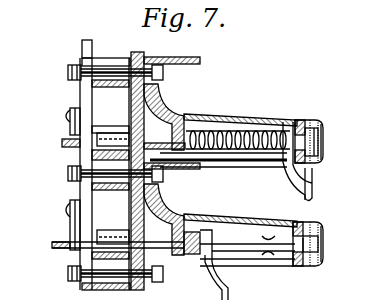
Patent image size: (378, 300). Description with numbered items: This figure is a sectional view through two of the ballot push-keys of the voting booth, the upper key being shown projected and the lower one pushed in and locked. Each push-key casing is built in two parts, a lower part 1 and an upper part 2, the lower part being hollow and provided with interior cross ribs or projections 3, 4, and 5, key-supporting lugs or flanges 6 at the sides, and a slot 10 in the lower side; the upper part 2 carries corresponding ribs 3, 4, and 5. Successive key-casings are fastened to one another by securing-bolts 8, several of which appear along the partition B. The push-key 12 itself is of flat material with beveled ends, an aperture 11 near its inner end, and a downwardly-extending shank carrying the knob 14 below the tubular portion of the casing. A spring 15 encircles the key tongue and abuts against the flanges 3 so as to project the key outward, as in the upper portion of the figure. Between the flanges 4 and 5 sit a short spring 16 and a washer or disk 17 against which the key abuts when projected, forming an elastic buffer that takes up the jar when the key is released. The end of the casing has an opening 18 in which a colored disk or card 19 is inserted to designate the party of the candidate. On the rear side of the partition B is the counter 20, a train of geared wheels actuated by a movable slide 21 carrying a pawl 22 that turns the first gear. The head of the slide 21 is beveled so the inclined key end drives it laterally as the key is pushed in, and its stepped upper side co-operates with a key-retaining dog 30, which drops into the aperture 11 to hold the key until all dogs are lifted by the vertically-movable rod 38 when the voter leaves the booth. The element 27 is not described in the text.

The lower casing part 1 is at (249, 165).
The upper casing part 2 is at (262, 119).
The cross rib 3 is at (181, 116).
The cross rib 4 is at (301, 252).
The cross rib 5 is at (303, 264).
The key-supporting lug 6 is at (268, 242).
The securing-bolt 8 is at (163, 73).
The slot 10 is at (250, 262).
The aperture 11 is at (76, 249).
The push-key 12 is at (58, 249).
The knob 14 is at (313, 185).
The spring 15 is at (224, 136).
The short spring 16 is at (312, 121).
The washer or disk 17 is at (300, 120).
The opening 18 is at (323, 137).
The disk or card 19 is at (323, 150).
The counter 20 is at (105, 174).
The slide 21 is at (62, 143).
The pawl 22 is at (110, 129).
The bolt head 27 is at (68, 182).
The key-retaining dog 30 is at (68, 121).
The vertically-movable rod 38 is at (82, 44).
The partition B is at (143, 56).